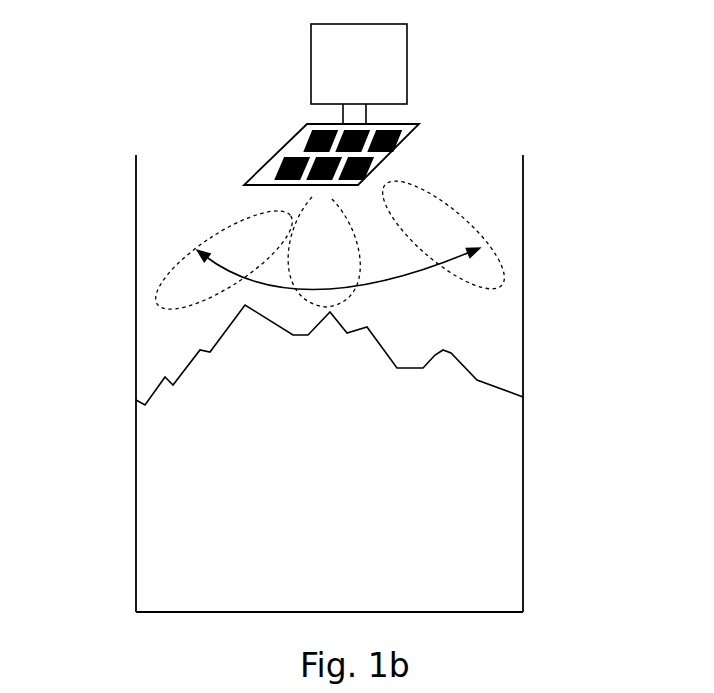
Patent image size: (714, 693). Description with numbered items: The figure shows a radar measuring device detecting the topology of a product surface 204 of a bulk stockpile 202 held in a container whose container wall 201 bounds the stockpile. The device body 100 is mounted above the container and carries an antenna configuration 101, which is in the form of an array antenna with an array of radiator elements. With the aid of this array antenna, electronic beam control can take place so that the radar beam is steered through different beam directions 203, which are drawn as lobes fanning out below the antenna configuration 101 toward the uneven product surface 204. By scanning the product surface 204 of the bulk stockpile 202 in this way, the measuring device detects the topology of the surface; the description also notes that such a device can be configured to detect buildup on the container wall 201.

The measurement device housing 100 is at (398, 90).
The antenna configuration 101 is at (283, 152).
The container wall 201 is at (523, 340).
The bulk stockpile 202 is at (480, 528).
The beam directions 203 is at (175, 288).
The product surface 204 is at (523, 398).